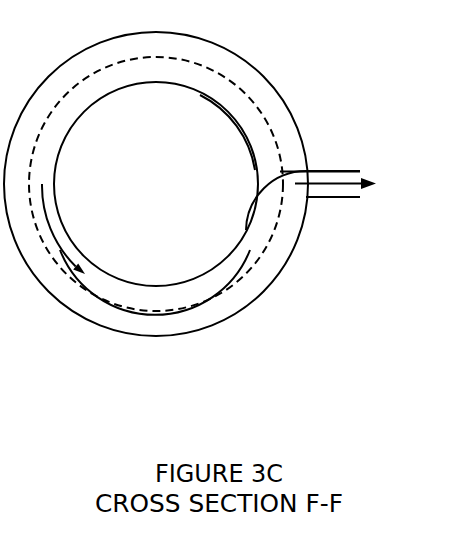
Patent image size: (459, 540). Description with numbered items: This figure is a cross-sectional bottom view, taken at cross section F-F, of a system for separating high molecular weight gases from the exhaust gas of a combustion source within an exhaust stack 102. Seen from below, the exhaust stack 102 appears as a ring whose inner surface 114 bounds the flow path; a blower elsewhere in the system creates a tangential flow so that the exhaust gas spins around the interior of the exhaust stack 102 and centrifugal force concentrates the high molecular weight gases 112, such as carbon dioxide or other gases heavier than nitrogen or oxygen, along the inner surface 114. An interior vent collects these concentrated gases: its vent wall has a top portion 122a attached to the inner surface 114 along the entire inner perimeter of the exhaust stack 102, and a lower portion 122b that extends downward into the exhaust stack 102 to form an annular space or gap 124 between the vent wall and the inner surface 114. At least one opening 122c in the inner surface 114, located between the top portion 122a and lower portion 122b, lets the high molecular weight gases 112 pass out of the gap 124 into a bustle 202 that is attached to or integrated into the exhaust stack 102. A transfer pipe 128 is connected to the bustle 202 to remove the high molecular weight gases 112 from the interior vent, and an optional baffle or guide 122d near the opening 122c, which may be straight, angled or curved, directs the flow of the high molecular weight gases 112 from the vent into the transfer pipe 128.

The exhaust stack 102 is at (260, 107).
The high molecular weight gases 112 is at (355, 184).
The inner surface 114 is at (228, 74).
The top portion of vent wall 122a is at (181, 321).
The lower portion of vent wall 122b is at (247, 134).
The opening 122c is at (311, 197).
The baffle or guide 122d is at (273, 172).
The annular space or gap 124 is at (182, 68).
The transfer pipe 128 is at (321, 172).
The bustle 202 is at (258, 70).